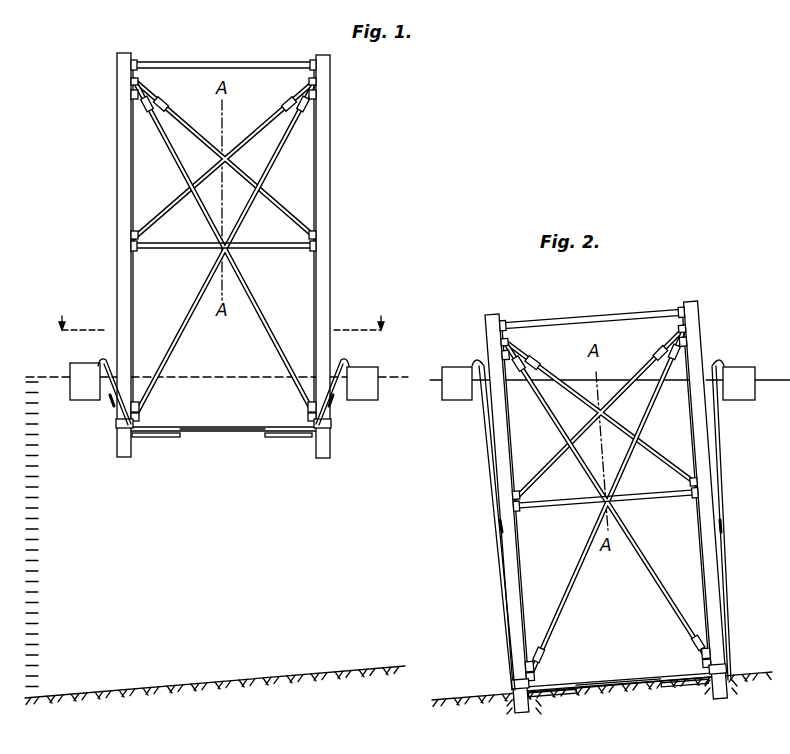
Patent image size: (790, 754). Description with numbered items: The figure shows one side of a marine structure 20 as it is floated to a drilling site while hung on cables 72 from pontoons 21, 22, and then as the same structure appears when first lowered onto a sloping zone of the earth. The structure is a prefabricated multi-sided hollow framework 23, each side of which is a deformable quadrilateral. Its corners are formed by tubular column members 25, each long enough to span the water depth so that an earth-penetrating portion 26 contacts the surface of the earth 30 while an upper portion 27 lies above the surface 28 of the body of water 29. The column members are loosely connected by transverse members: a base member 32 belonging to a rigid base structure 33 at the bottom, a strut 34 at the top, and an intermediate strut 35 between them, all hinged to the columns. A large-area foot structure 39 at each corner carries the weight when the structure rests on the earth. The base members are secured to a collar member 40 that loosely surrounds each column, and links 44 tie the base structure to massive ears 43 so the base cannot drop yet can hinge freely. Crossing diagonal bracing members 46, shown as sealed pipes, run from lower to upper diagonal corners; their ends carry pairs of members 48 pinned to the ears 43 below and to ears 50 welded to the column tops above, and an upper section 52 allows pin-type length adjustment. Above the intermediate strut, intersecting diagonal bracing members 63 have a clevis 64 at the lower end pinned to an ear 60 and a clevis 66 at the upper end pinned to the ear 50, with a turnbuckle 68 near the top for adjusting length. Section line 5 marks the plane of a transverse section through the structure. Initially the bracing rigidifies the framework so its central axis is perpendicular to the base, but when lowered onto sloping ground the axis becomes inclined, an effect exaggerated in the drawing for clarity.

In FIG. 1, the section line 5- 5 is at (220, 326).
In FIG. 1, the marine structure 20 is at (343, 182).
In FIG. 2, the marine structure 20 is at (716, 465).
In FIG. 1, the pontoon 21 is at (366, 368).
In FIG. 2, the pontoon 21 is at (744, 370).
In FIG. 1, the pontoon 22 is at (80, 367).
In FIG. 2, the pontoon 22 is at (456, 370).
In FIG. 1, the multi-sided hollow framework 23 is at (343, 258).
In FIG. 2, the multi-sided hollow framework 23 is at (722, 532).
In FIG. 1, the tubular column member 25 is at (116, 298).
In FIG. 2, the tubular column member 25 is at (504, 572).
In FIG. 1, the earth-penetrating portion 26 is at (116, 452).
In FIG. 2, the earth-penetrating portion 26 is at (519, 712).
In FIG. 1, the upper portion 27 is at (331, 64).
In FIG. 2, the upper portion 27 is at (699, 305).
In FIG. 1, the surface of the body of water 28 is at (386, 376).
In FIG. 2, the surface of the body of water 28 is at (762, 378).
In FIG. 1, the body of water 29 is at (216, 398).
In FIG. 2, the body of water 29 is at (770, 436).
In FIG. 1, the surface of the earth 30 is at (254, 676).
In FIG. 2, the surface of the earth 30 is at (741, 680).
In FIG. 1, the base member 32 is at (241, 432).
In FIG. 2, the base member 32 is at (638, 682).
In FIG. 1, the base structure 33 is at (208, 436).
In FIG. 2, the base structure 33 is at (601, 690).
In FIG. 1, the strut 34 is at (176, 62).
In FIG. 2, the strut 34 is at (546, 326).
In FIG. 1, the intermediate strut 35 is at (164, 249).
In FIG. 2, the intermediate strut 35 is at (553, 501).
In FIG. 1, the foot structure 39 is at (158, 444).
In FIG. 2, the foot structure 39 is at (686, 688).
In FIG. 1, the collar member 40 is at (122, 430).
In FIG. 2, the collar member 40 is at (514, 680).
In FIG. 1, the ear 43 is at (112, 410).
In FIG. 2, the ear 43 is at (610, 526).
In FIG. 1, the link 44 is at (139, 418).
In FIG. 2, the link 44 is at (618, 670).
In FIG. 1, the diagonal bracing member 46 is at (176, 320).
In FIG. 2, the diagonal bracing member 46 is at (553, 626).
In FIG. 1, the member 48 is at (139, 406).
In FIG. 2, the member 48 is at (617, 660).
In FIG. 1, the ear 50 is at (130, 65).
In FIG. 2, the ear 50 is at (591, 319).
In FIG. 1, the upper section 52 is at (133, 98).
In FIG. 2, the upper section 52 is at (594, 348).
In FIG. 1, the ear 60 is at (130, 252).
In FIG. 2, the ear 60 is at (605, 500).
In FIG. 1, the diagonal bracing member 63 is at (187, 191).
In FIG. 2, the diagonal bracing member 63 is at (676, 462).
In FIG. 1, the clevis 64 is at (130, 236).
In FIG. 2, the clevis 64 is at (604, 489).
In FIG. 1, the clevis 66 is at (131, 82).
In FIG. 2, the clevis 66 is at (593, 335).
In FIG. 1, the turnbuckle 68 is at (163, 102).
In FIG. 2, the turnbuckle 68 is at (607, 503).
In FIG. 1, the cable 72 is at (112, 414).
In FIG. 2, the cable 72 is at (490, 512).